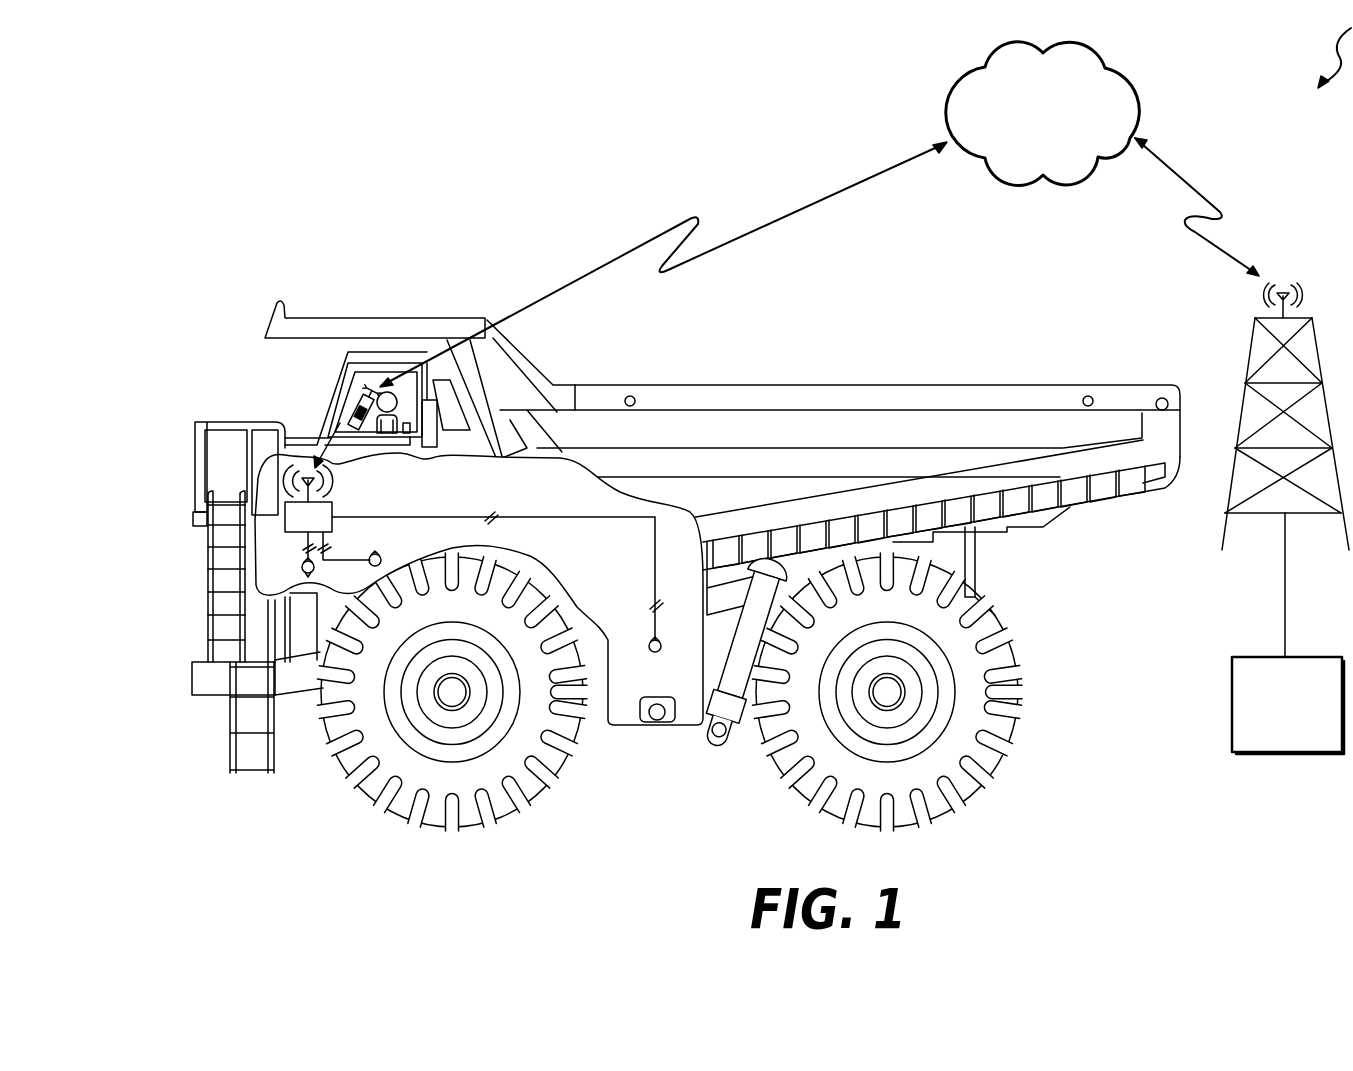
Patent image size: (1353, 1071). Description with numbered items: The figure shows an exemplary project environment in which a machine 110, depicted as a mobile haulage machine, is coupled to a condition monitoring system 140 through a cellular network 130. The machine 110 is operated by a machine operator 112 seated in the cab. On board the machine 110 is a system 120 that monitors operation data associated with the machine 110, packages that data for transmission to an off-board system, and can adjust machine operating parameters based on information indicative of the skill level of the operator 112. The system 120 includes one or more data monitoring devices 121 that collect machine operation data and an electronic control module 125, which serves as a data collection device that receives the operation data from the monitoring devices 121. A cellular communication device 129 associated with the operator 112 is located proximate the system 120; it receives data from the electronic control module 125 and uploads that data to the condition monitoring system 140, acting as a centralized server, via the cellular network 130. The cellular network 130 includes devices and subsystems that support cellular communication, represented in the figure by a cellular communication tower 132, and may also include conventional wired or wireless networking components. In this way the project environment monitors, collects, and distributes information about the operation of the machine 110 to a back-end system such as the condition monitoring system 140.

The machine 110 is at (690, 385).
The machine operator 112 is at (380, 437).
The system 120 is at (603, 487).
The data monitoring devices 121 is at (303, 565).
The electronic control module (ECM) 125 is at (345, 498).
The cellular communication device 129 is at (336, 421).
The cellular network 130 is at (945, 94).
The cellular communication tower 132 is at (1250, 352).
The condition monitoring system 140 is at (1232, 682).